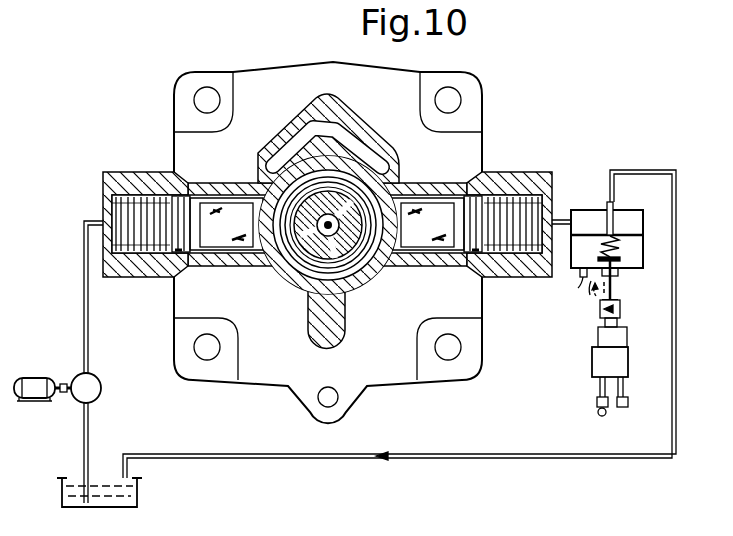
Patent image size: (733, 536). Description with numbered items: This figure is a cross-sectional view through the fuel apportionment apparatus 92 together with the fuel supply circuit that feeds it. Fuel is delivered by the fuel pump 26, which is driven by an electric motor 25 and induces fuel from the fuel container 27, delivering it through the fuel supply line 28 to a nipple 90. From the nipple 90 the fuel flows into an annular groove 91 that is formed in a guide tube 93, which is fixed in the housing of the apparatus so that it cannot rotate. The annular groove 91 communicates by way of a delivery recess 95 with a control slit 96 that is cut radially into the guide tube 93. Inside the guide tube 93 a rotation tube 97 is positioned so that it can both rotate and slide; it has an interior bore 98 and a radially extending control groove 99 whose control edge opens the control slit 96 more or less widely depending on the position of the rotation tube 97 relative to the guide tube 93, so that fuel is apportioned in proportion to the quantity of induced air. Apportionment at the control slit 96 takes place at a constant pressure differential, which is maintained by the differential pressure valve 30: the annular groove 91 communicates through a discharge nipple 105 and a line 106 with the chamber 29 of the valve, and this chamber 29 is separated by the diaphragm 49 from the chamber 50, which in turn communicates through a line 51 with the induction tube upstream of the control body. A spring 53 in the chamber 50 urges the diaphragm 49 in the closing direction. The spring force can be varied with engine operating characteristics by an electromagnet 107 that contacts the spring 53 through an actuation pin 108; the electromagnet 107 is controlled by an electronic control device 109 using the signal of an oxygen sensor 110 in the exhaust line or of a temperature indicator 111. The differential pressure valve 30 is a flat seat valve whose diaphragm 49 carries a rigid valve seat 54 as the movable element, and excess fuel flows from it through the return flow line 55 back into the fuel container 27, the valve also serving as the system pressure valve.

The electric motor 25 is at (36, 385).
The fuel pump 26 is at (91, 388).
The fuel container 27 is at (138, 490).
The fuel supply line 28 is at (83, 255).
The chamber 29 is at (628, 220).
The differential pressure valve 30 is at (593, 298).
The diaphragm 49 is at (632, 233).
The chamber 50 is at (580, 271).
The line 51 is at (586, 280).
The spring 53 is at (630, 250).
The rigid valve seat 54 is at (605, 232).
The return flow line 55 is at (648, 170).
The nipple 90 is at (133, 181).
The annular groove 91 is at (295, 267).
The fuel apportionment apparatus 92 is at (285, 123).
The guide tube 93 is at (352, 291).
The delivery recess 95 is at (335, 212).
The control slit 96 is at (276, 171).
The rotation tube 97 is at (380, 270).
The interior bore 98 is at (318, 262).
The control groove 99 is at (274, 271).
The discharge nipple 105 is at (520, 182).
The line 106 is at (560, 218).
The electromagnet 107 is at (622, 311).
The actuation pin 108 is at (616, 289).
The electronic control device 109 is at (602, 358).
The oxygen sensor 110 is at (600, 407).
The temperature indicator 111 is at (623, 407).